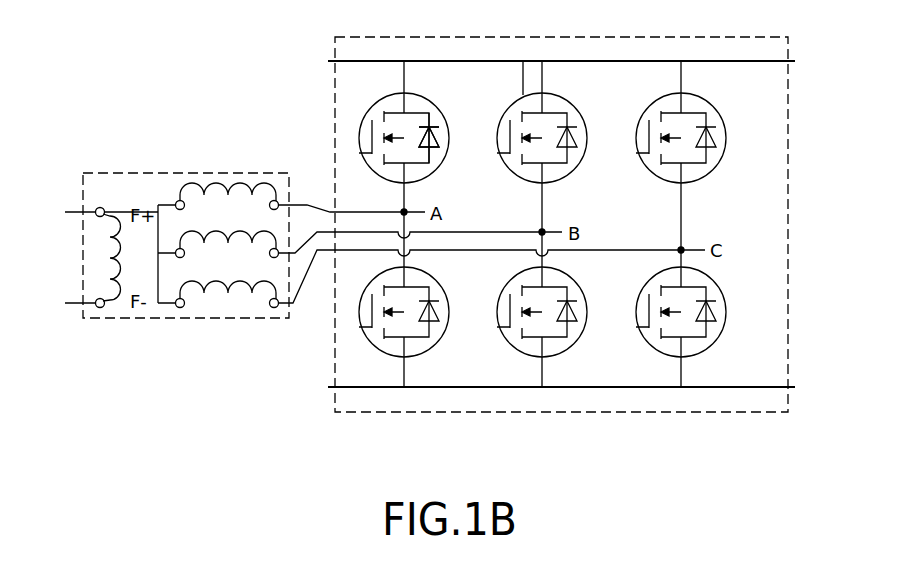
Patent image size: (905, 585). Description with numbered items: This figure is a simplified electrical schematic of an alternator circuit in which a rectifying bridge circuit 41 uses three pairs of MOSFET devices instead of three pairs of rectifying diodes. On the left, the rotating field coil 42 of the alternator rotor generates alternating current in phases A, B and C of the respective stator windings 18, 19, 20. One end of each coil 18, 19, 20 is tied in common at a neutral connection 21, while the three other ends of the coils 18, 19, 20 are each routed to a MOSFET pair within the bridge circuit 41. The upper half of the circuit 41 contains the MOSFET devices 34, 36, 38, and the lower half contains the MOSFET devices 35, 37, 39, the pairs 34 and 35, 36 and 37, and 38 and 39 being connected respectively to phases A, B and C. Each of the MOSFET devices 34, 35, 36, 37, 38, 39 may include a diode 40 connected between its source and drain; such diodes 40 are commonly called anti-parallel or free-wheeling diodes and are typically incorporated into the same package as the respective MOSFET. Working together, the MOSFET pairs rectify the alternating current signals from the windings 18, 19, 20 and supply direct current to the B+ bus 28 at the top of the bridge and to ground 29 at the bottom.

The stator winding 18 is at (212, 183).
The stator winding 19 is at (242, 232).
The stator winding 20 is at (222, 289).
The neutral connection 21 is at (158, 205).
The B+ bus 28 is at (743, 60).
The ground 29 is at (757, 389).
The MOSFET device 34 is at (427, 150).
The MOSFET device 35 is at (427, 324).
The MOSFET device 36 is at (567, 150).
The MOSFET device 37 is at (569, 323).
The MOSFET device 38 is at (699, 158).
The MOSFET device 39 is at (706, 324).
The diode 40 is at (437, 131).
The rectifying bridge circuit 41 is at (608, 412).
The rotating field coil 42 is at (100, 208).